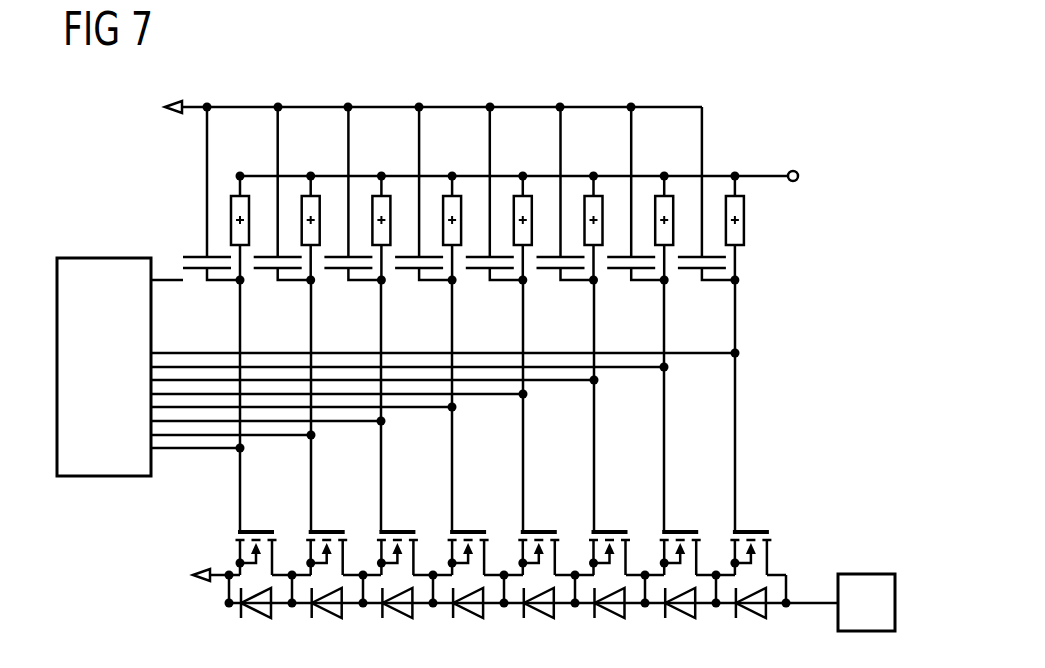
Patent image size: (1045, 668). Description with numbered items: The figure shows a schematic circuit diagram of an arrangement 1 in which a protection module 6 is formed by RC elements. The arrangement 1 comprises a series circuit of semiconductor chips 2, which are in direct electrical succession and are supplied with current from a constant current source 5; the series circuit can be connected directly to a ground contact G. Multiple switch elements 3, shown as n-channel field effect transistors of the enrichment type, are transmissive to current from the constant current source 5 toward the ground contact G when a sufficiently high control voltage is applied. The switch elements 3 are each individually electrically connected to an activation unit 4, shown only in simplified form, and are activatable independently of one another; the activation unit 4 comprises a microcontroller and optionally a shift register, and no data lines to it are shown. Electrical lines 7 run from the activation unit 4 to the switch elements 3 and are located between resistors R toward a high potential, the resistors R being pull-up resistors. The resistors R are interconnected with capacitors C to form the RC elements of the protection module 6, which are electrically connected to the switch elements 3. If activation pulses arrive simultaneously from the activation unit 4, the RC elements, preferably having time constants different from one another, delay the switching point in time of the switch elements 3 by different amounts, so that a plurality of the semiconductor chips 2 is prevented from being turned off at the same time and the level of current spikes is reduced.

The arrangement 1 is at (781, 79).
The semiconductor chip 2 is at (748, 612).
The switch element 3 is at (753, 531).
The activation unit 4 is at (103, 258).
The constant current source 5 is at (866, 573).
The protection module 6 is at (803, 190).
The electrical line 7 is at (735, 431).
The resistor R is at (742, 220).
The capacitor C is at (725, 263).
The ground contact G is at (203, 568).